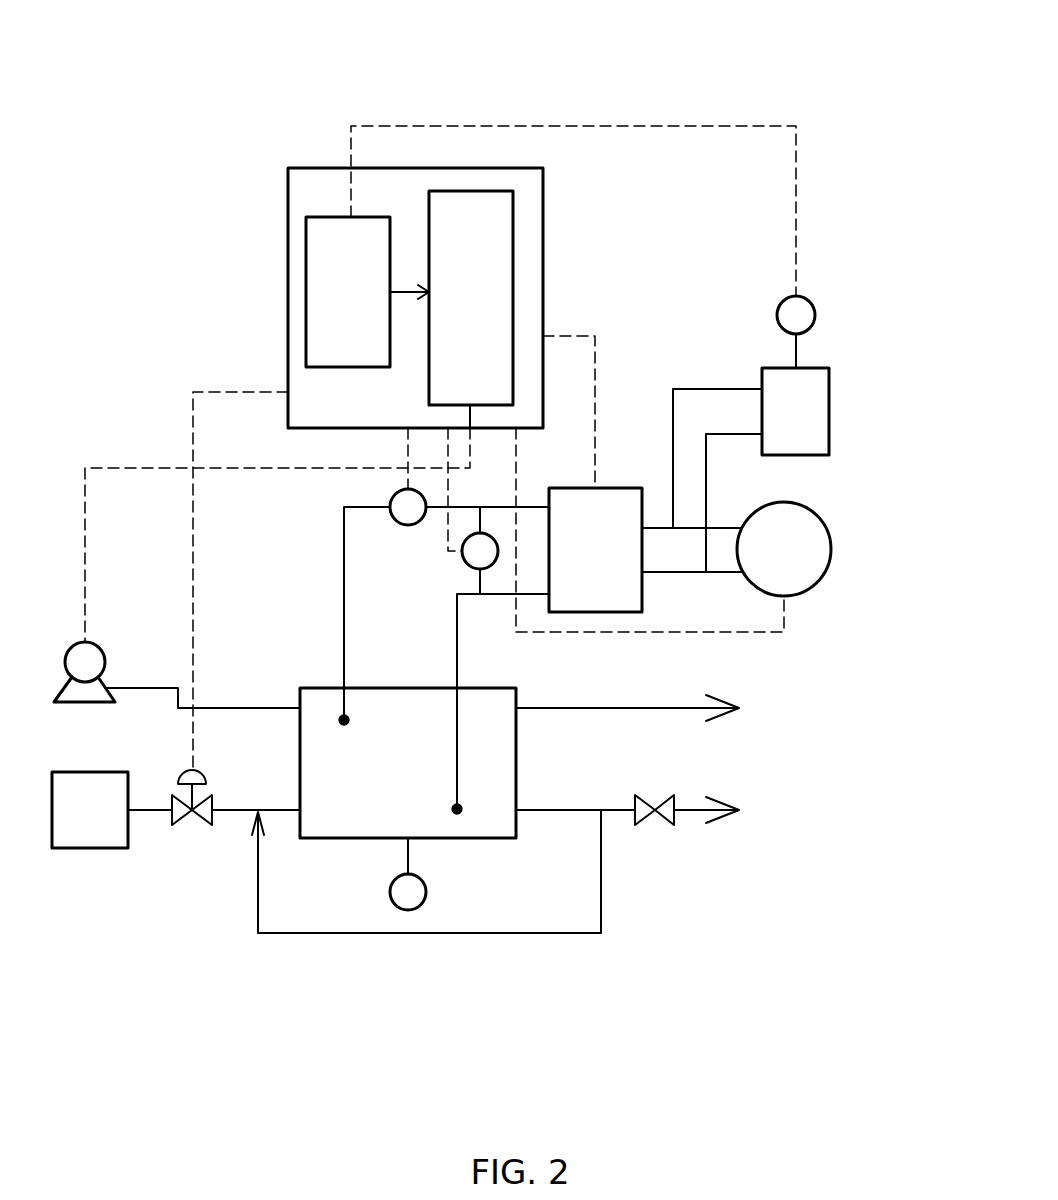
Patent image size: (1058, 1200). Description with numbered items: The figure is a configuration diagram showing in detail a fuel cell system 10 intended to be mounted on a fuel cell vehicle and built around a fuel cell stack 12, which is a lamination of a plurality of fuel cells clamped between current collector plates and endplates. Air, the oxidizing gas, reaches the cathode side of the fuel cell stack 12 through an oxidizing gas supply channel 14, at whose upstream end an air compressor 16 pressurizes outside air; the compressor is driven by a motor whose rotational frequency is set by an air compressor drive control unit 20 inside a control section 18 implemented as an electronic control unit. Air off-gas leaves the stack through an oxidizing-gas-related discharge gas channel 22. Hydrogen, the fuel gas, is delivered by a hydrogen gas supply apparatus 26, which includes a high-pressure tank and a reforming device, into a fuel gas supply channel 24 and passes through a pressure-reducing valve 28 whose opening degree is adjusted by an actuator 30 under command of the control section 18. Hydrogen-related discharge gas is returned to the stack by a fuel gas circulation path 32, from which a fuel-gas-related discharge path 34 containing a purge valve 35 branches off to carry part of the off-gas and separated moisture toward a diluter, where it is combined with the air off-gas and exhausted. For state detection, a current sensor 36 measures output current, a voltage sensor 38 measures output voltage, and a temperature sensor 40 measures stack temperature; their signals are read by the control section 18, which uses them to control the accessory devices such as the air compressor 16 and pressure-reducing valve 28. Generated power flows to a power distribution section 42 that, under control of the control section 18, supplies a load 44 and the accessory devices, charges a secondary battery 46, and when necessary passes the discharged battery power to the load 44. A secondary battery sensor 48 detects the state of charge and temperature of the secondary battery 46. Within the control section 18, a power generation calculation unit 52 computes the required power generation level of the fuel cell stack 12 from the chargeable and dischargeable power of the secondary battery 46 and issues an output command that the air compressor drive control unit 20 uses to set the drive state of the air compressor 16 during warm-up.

The fuel cell system 10 is at (807, 102).
The fuel cell stack 12 is at (320, 688).
The oxidizing gas supply channel 14 is at (248, 708).
The air compressor 16 is at (105, 652).
The control section 18 is at (543, 250).
The air compressor drive control unit 20 is at (470, 191).
The oxidizing-gas-related discharge gas channel 22 is at (600, 708).
The fuel gas supply channel 24 is at (235, 812).
The hydrogen gas supply apparatus 26 is at (90, 848).
The pressure-reducing valve 28 is at (178, 823).
The actuator 30 is at (200, 777).
The fuel gas circulation path 32 is at (492, 933).
The fuel-gas-related discharge path 34 is at (615, 807).
The purge valve 35 is at (640, 825).
The current sensor 36 is at (405, 527).
The voltage sensor 38 is at (465, 562).
The temperature sensor 40 is at (427, 893).
The power distribution section 42 is at (620, 488).
The load 44 is at (820, 505).
The secondary battery 46 is at (830, 395).
The secondary battery sensor 48 is at (832, 300).
The power generation calculation unit 52 is at (306, 245).